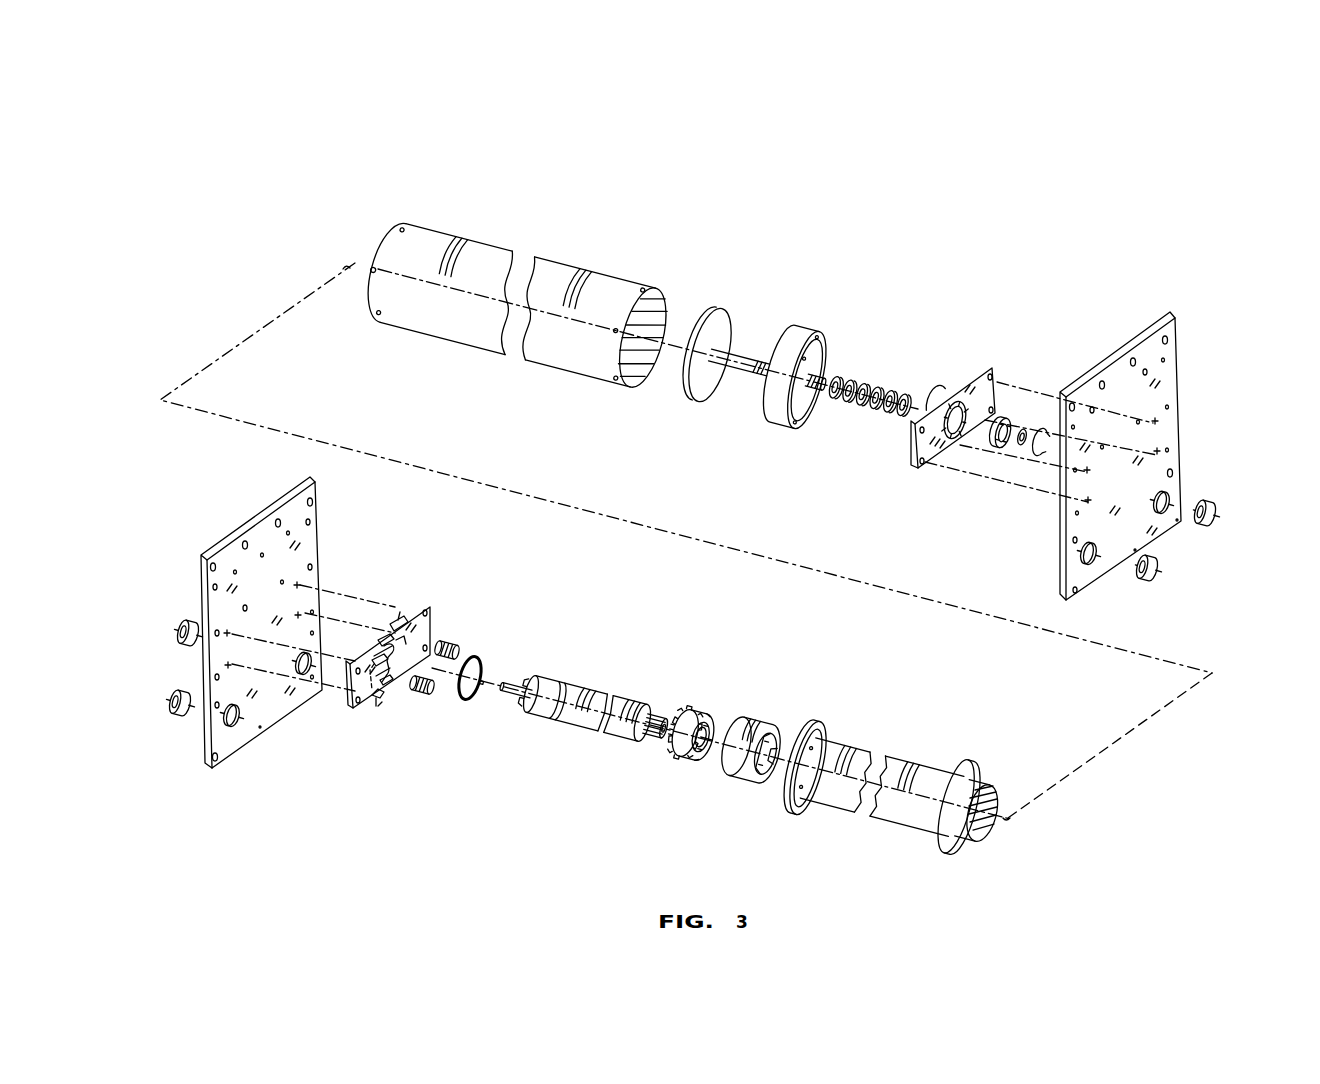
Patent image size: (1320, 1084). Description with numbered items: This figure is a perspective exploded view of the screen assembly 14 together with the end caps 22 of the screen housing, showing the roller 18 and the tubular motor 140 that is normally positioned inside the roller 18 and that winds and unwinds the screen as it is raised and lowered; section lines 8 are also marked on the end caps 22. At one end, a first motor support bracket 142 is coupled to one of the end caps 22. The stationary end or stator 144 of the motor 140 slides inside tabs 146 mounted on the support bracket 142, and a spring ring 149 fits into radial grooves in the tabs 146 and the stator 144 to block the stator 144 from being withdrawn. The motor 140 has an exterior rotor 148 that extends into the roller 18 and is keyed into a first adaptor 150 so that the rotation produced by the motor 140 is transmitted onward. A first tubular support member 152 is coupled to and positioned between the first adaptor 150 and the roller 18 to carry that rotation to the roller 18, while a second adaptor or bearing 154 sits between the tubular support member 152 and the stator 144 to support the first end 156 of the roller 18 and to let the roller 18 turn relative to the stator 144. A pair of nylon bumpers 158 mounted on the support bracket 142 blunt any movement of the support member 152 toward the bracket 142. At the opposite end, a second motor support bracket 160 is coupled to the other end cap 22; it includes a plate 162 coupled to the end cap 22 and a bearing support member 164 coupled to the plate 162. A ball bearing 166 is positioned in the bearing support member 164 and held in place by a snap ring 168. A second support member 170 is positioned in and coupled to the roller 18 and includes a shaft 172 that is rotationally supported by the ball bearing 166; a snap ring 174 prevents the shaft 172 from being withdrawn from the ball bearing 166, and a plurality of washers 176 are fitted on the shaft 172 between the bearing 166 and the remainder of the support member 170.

The section line 8 is at (1243, 416).
The screen assembly 14 is at (935, 264).
The roller 18 is at (517, 286).
The end caps 22 is at (1117, 360).
The tubular motor 140 is at (604, 688).
The first motor support bracket 142 is at (423, 636).
The stator 144 is at (545, 672).
The tabs 146 is at (405, 606).
The exterior rotor 148 is at (644, 705).
The spring ring 149 is at (461, 728).
The first adaptor 150 is at (767, 718).
The first tubular support member 152 is at (863, 710).
The second adaptor or bearing 154 is at (692, 778).
The first end of roller 156 is at (433, 216).
The nylon bumpers 158 is at (461, 634).
The second motor support bracket 160 is at (1034, 422).
The plate 162 is at (972, 393).
The bearing support member 164 is at (940, 385).
The ball bearing 166 is at (995, 462).
The snap ring 168 is at (1034, 474).
The second support member 170 is at (794, 370).
The shaft 172 is at (808, 370).
The snap ring 174 is at (1031, 414).
The washers 176 is at (852, 442).